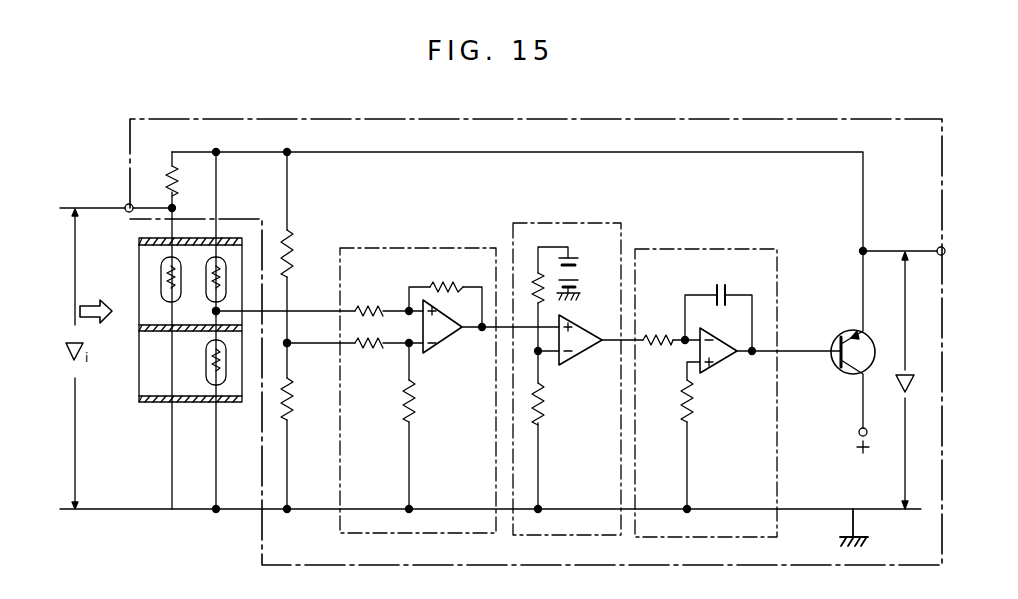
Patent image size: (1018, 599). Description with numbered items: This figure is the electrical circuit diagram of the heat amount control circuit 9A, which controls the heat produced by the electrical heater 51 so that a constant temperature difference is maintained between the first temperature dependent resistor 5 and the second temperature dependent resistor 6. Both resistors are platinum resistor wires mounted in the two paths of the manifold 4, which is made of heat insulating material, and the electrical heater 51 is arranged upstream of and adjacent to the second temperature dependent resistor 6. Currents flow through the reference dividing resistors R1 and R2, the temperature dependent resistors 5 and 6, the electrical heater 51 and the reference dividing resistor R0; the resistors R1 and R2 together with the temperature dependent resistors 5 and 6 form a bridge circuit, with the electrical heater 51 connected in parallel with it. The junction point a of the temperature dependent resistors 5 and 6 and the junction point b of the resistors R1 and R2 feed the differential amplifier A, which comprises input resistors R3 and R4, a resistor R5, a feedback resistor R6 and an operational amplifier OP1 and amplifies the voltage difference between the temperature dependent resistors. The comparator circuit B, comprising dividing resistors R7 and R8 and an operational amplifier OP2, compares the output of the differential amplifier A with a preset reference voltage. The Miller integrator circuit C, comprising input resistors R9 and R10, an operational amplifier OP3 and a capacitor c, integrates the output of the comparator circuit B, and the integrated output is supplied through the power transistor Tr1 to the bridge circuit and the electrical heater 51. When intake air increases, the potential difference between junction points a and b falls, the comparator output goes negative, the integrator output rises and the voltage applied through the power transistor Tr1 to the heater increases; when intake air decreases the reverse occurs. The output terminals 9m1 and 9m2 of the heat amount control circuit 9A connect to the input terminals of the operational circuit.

The heat amount control circuit 9A is at (693, 120).
The output terminal 9m1 is at (944, 247).
The output terminal 9m2 is at (128, 204).
The manifold 4 is at (158, 404).
The first temperature dependent resistor 5 is at (208, 370).
The electrical heater 51 is at (161, 279).
The second temperature dependent resistor 6 is at (223, 262).
The reference dividing resistor R0 is at (166, 180).
The reference dividing resistor R1 is at (294, 255).
The reference dividing resistor R2 is at (294, 392).
The input resistor R3 is at (360, 310).
The input resistor R4 is at (366, 349).
The resistor R5 is at (416, 400).
The feedback resistor R6 is at (450, 282).
The dividing resistor R7 is at (536, 290).
The dividing resistor R8 is at (544, 402).
The input resistor R9 is at (660, 348).
The input resistor R10 is at (692, 400).
The operational amplifier OP1 is at (444, 350).
The operational amplifier OP2 is at (584, 352).
The operational amplifier OP3 is at (730, 358).
The differential amplifier A is at (368, 247).
The comparator circuit B is at (590, 222).
The Miller integrator circuit C is at (650, 248).
The junction point a is at (212, 312).
The junction point b is at (290, 345).
The capacitor c is at (722, 306).
The power transistor Tr1 is at (844, 372).